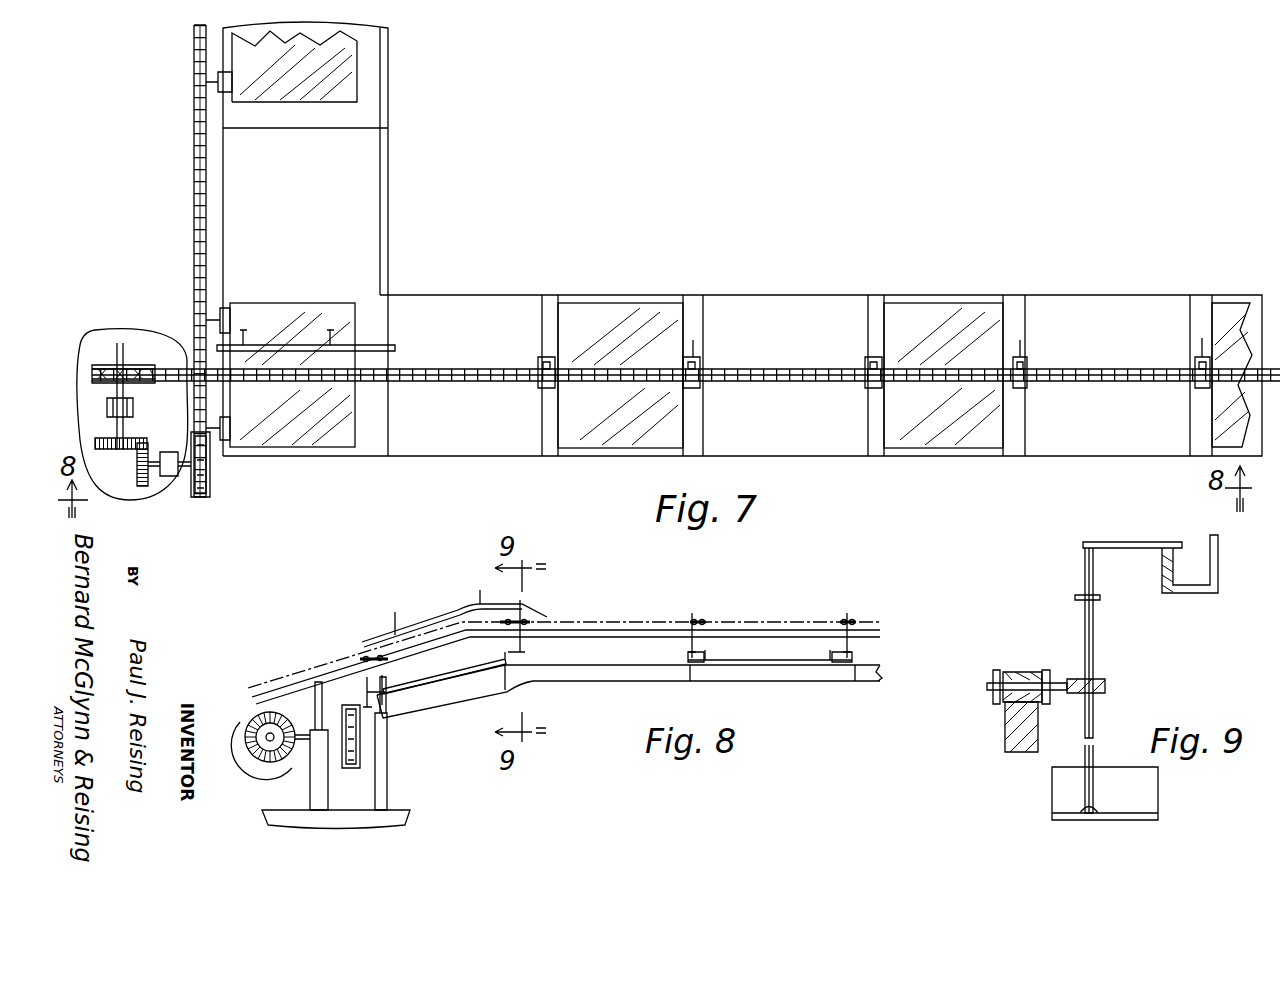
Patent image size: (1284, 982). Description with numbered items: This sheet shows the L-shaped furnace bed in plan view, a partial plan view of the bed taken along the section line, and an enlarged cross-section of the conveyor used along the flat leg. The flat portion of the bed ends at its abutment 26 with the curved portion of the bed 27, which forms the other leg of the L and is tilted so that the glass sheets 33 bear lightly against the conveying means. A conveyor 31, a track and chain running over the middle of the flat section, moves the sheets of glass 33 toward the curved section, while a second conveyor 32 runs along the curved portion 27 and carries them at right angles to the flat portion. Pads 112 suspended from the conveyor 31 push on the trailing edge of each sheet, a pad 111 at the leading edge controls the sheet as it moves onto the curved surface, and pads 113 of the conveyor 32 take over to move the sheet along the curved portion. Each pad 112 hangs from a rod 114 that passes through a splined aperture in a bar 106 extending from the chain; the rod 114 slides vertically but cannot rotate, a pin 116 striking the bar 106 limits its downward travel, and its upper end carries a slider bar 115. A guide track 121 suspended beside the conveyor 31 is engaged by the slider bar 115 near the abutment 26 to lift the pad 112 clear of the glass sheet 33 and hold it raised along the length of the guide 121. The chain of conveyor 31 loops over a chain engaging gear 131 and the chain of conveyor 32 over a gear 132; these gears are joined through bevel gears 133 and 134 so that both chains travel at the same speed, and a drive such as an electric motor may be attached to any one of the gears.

In FIG. 7, the abutment 26 is at (380, 455).
In FIG. 8, the abutment 26 is at (533, 665).
In FIG. 7, the curved portion of the bed 27 is at (372, 160).
In FIG. 7, the conveyor 31 is at (760, 362).
In FIG. 8, the conveyor 31 is at (749, 615).
In FIG. 7, the conveyor 32 is at (190, 150).
In FIG. 8, the conveyor 32 is at (355, 696).
In FIG. 7, the sheet of glass 33 is at (612, 312).
In FIG. 8, the sheet of glass 33 is at (790, 656).
In FIG. 9, the bar 106 is at (1052, 680).
In FIG. 8, the pad 111 is at (700, 655).
In FIG. 7, the pad 112 is at (688, 362).
In FIG. 8, the pad 112 is at (520, 660).
In FIG. 7, the pad 113 is at (232, 312).
In FIG. 8, the pad 113 is at (372, 692).
In FIG. 9, the rod 114 is at (1095, 660).
In FIG. 9, the slider bar 115 is at (1130, 545).
In FIG. 9, the pin 116 is at (1078, 597).
In FIG. 7, the guide track 121 is at (310, 345).
In FIG. 9, the guide track 121 is at (1165, 578).
In FIG. 7, the chain engaging gear 131 is at (135, 365).
In FIG. 7, the gear 132 is at (212, 482).
In FIG. 8, the gear 132 is at (360, 760).
In FIG. 7, the bevel gear 133 is at (107, 436).
In FIG. 8, the bevel gear 133 is at (263, 712).
In FIG. 7, the bevel gear 134 is at (146, 455).